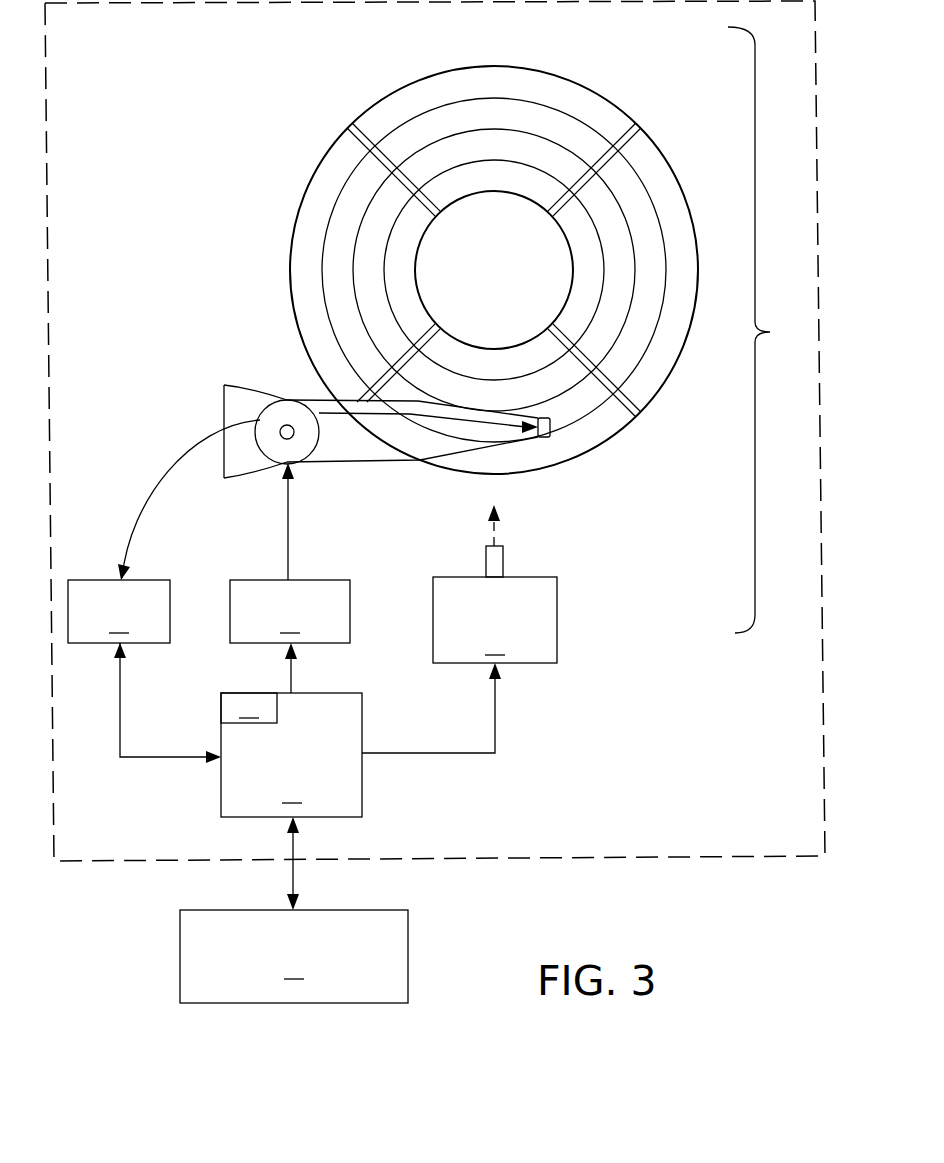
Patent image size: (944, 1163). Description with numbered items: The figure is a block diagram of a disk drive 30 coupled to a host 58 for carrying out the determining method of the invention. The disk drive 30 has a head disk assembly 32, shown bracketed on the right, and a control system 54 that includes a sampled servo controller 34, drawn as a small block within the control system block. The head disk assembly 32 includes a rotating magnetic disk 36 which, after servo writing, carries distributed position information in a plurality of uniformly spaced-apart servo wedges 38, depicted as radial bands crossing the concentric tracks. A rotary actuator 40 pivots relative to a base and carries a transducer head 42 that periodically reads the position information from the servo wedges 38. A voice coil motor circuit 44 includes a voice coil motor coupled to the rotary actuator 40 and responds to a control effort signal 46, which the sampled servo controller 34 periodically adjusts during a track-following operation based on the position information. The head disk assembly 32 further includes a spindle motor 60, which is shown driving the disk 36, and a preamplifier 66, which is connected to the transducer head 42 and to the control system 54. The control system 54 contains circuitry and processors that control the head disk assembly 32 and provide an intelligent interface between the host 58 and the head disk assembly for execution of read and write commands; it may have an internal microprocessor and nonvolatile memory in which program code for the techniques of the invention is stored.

The disk drive 30 is at (713, 857).
The head disk assembly 32 is at (765, 330).
The sampled servo controller 34 is at (249, 708).
The rotating magnetic disk 36 is at (383, 99).
The servo wedges 38 is at (348, 145).
The rotary actuator 40 is at (385, 444).
The transducer head 42 is at (545, 426).
The voice coil motor circuit 44 is at (290, 553).
The control effort signal 46 is at (291, 676).
The control system 54 is at (361, 786).
The host 58 is at (294, 956).
The spindle motor 60 is at (495, 584).
The preamplifier 66 is at (164, 591).